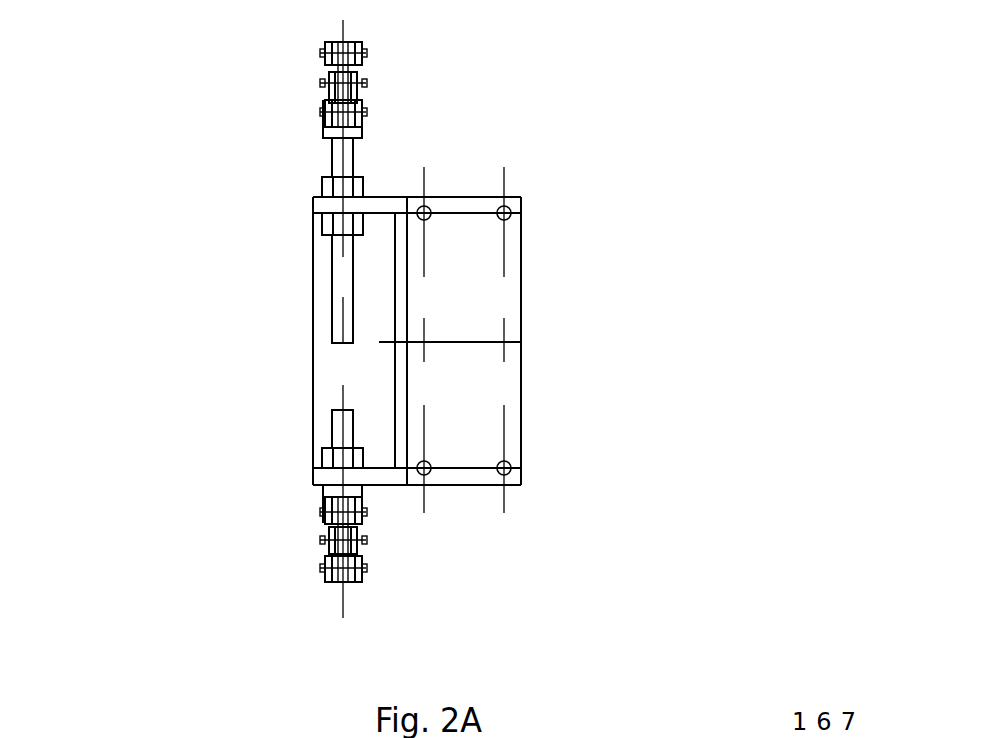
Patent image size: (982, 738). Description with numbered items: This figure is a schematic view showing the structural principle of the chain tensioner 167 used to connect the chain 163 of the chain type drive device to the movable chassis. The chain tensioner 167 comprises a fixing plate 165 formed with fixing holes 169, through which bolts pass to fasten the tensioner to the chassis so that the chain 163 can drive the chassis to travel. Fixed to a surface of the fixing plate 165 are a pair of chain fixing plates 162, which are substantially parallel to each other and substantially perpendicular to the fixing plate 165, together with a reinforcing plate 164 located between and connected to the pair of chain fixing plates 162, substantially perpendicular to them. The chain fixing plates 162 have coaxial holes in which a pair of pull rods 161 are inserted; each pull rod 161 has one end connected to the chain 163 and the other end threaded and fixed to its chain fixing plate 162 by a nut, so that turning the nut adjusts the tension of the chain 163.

The pull rod 161 is at (337, 165).
The chain fixing plate 162 is at (388, 205).
The chain 163 is at (323, 112).
The reinforcing plate 164 is at (401, 372).
The fixing plate 165 is at (468, 442).
The chain tensioner 167 is at (703, 125).
The fixing hole 169 is at (425, 466).